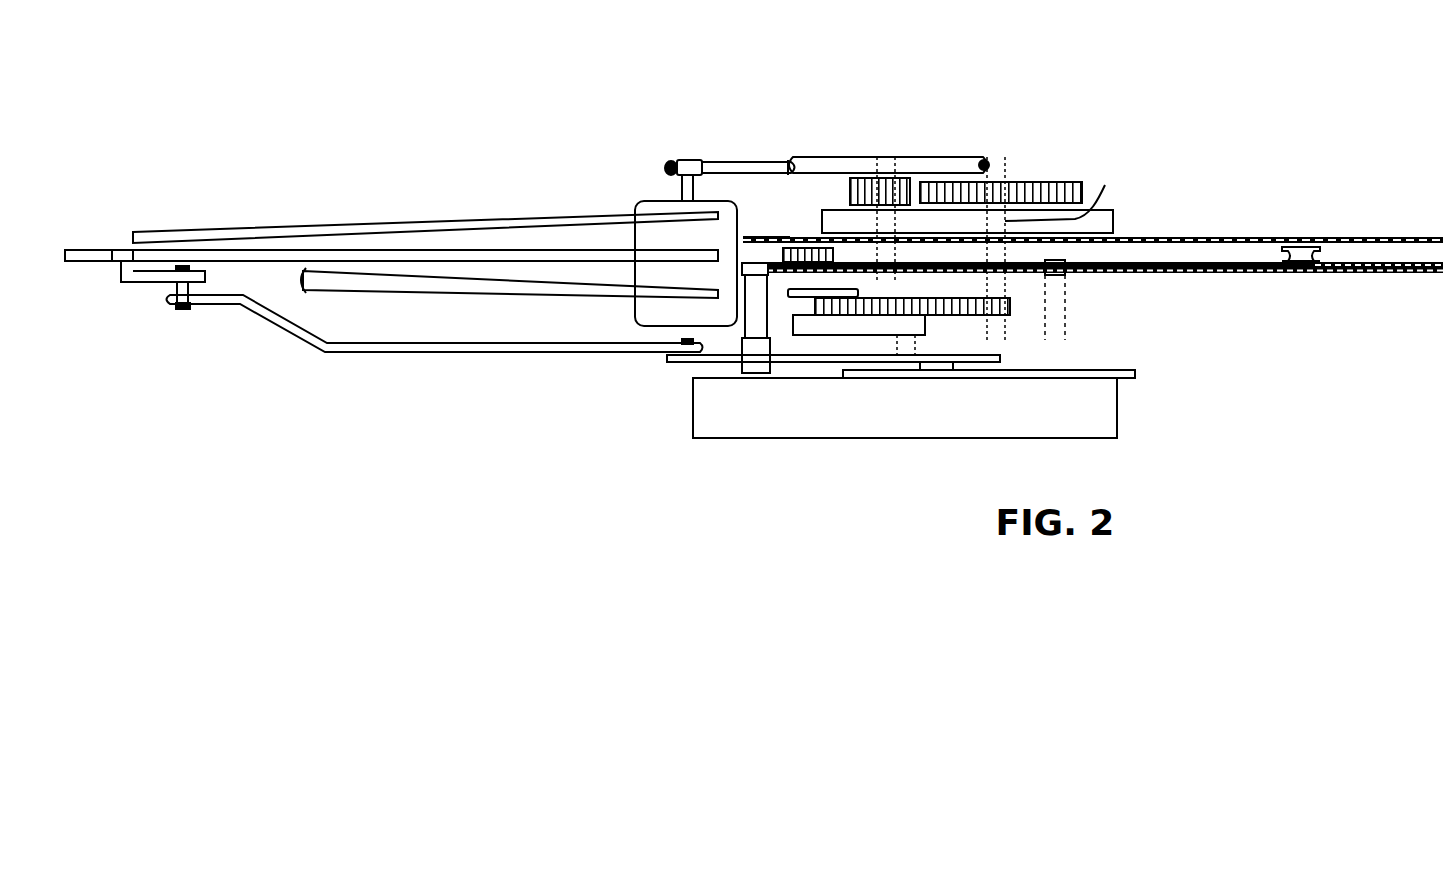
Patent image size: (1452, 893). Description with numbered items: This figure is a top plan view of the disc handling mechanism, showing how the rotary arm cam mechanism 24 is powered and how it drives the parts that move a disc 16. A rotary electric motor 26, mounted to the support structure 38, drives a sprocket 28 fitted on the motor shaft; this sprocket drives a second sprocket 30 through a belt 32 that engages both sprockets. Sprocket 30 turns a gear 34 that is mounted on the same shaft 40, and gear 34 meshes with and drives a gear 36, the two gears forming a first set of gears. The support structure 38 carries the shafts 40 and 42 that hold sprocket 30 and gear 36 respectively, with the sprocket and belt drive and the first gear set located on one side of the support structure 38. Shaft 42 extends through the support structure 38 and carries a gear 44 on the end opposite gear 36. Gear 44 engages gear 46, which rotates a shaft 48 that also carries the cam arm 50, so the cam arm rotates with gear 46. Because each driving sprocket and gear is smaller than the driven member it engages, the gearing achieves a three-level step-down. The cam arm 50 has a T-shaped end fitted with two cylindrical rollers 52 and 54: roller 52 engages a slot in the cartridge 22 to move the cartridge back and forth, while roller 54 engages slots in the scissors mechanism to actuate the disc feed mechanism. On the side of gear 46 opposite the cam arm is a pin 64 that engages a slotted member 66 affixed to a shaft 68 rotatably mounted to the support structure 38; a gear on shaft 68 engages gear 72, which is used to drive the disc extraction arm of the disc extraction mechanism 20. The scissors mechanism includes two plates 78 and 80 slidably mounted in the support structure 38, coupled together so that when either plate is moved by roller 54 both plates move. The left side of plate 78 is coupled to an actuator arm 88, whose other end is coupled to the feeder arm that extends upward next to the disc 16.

The disc 16 is at (442, 278).
The disc extraction mechanism 20 is at (1217, 262).
The cartridge 22 is at (1362, 237).
The rotary arm cam mechanism 24 is at (1038, 112).
The rotary electric motor 26 is at (640, 201).
The sprocket 28 is at (687, 158).
The sprocket 30 is at (932, 157).
The belt 32 is at (752, 161).
The gear 34 is at (782, 183).
The gear 36 is at (1045, 182).
The support structure 38 is at (1113, 218).
The shaft 40 is at (876, 168).
The shaft 42 is at (1105, 185).
The gear 44 is at (1066, 301).
The gear 46 is at (933, 313).
The shaft 48 is at (943, 290).
The cam arm 50 is at (892, 419).
The cylindrical roller 52 is at (737, 305).
The cylindrical roller 54 is at (747, 368).
The pin 64 is at (833, 292).
The slotted member 66 is at (797, 292).
The shaft 68 is at (742, 284).
The gear 72 is at (766, 220).
The plate 78 is at (783, 361).
The plate 80 is at (1095, 372).
The actuator arm 88 is at (466, 352).